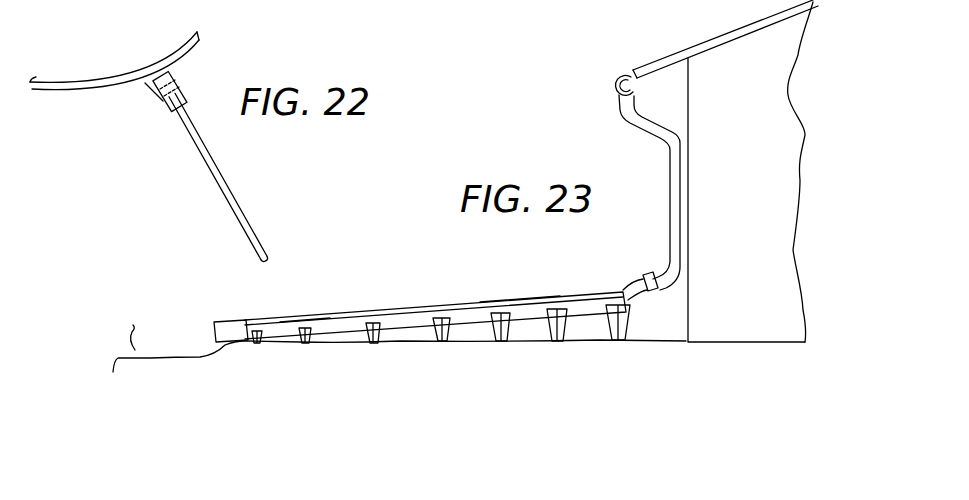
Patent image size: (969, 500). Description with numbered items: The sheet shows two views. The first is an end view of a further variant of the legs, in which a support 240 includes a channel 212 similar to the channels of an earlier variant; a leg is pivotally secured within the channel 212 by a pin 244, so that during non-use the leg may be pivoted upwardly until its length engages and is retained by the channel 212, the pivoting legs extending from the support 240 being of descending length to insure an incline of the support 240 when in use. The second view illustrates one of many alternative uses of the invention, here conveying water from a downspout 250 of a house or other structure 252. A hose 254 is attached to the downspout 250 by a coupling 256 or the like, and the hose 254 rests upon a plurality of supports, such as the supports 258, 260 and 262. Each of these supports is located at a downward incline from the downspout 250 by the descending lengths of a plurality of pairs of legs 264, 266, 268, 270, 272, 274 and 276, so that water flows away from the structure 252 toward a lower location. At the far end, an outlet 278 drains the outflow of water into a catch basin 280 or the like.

In FIG. 22, the support 240 is at (120, 78).
In FIG. 22, the channel 212 is at (165, 77).
In FIG. 22, the pin 244 is at (162, 98).
In FIG. 23, the house or other structure 252 is at (732, 57).
In FIG. 23, the downspout 250 is at (670, 229).
In FIG. 23, the hose 254 is at (630, 287).
In FIG. 23, the coupling 256 is at (644, 291).
In FIG. 23, the support 258 is at (535, 308).
In FIG. 23, the support 260 is at (407, 318).
In FIG. 23, the support 262 is at (334, 328).
In FIG. 23, the pair of legs 264 is at (625, 342).
In FIG. 23, the pair of legs 266 is at (557, 338).
In FIG. 23, the pair of legs 268 is at (500, 340).
In FIG. 23, the pair of legs 270 is at (447, 340).
In FIG. 23, the pair of legs 272 is at (377, 342).
In FIG. 23, the pair of legs 274 is at (305, 343).
In FIG. 23, the pair of legs 276 is at (255, 343).
In FIG. 23, the outlet 278 is at (223, 322).
In FIG. 23, the catch basin 280 is at (150, 358).